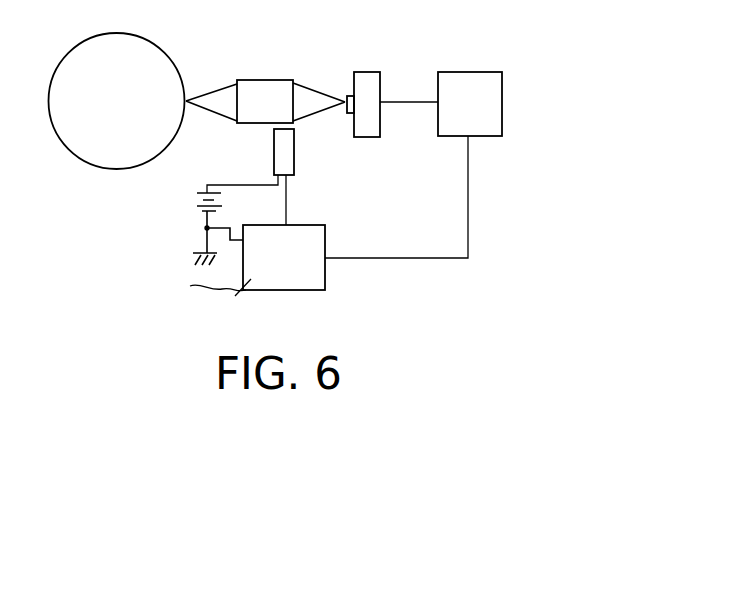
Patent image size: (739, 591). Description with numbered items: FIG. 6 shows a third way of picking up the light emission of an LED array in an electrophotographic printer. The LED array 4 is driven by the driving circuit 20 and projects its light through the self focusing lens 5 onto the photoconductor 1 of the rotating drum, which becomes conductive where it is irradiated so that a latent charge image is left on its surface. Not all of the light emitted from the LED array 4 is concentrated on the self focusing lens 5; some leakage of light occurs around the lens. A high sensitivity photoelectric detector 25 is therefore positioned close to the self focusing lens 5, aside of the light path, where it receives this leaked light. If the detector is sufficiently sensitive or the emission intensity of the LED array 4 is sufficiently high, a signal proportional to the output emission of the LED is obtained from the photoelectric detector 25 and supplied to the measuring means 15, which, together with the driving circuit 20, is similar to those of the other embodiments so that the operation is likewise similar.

The photoconductor 1 is at (163, 48).
The self focusing lens 5 is at (281, 80).
The LED array 4 is at (366, 72).
The driving circuit 20 is at (483, 72).
The high sensitivity photoelectric detector 25 is at (294, 163).
The measuring means 15 is at (325, 288).